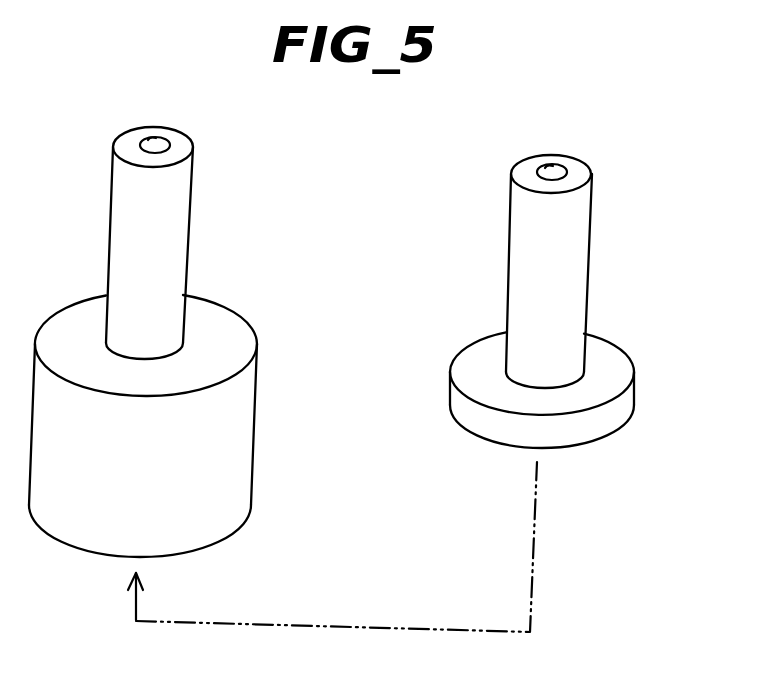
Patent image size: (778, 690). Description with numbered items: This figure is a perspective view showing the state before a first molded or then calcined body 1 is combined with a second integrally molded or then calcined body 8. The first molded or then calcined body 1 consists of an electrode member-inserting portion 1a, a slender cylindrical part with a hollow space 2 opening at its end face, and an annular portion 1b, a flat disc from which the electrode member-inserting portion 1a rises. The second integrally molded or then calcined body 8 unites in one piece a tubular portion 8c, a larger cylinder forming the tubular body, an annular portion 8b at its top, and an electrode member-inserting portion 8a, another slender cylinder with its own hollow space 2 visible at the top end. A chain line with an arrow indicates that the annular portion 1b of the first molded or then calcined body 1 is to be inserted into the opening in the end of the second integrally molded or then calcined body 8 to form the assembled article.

The first molded or then calcined body 1 is at (577, 286).
The electrode member-inserting portion 1a is at (573, 267).
The annular portion 1b is at (607, 378).
The hollow space 2 is at (160, 142).
The second integrally molded or then calcined body 8 is at (184, 335).
The electrode member-inserting portion 8a is at (173, 238).
The annular portion 8b is at (218, 340).
The tubular portion 8c is at (215, 450).